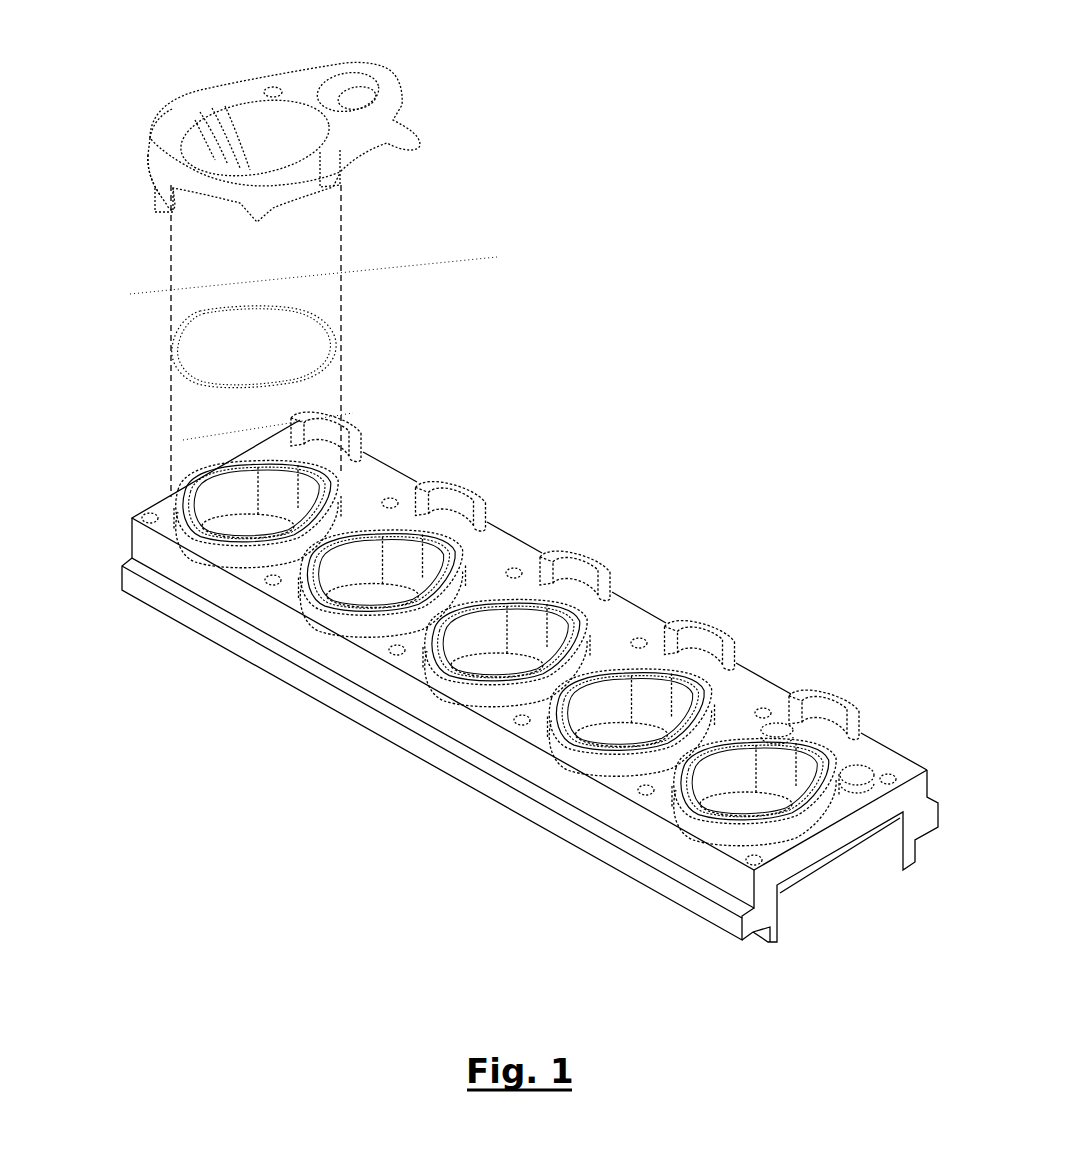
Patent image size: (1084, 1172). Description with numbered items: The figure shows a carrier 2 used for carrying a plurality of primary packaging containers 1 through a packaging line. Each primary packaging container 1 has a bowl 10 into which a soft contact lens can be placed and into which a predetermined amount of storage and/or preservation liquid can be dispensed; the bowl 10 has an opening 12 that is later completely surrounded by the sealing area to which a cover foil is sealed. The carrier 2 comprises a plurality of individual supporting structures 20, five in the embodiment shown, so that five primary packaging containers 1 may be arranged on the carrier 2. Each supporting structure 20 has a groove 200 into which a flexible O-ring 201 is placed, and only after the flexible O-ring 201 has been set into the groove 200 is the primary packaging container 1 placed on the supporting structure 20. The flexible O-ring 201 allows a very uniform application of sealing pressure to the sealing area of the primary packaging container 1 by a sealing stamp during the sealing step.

The primary packaging container 1 is at (207, 82).
The bowl 10 is at (260, 127).
The opening 12 is at (184, 138).
The carrier 2 is at (627, 603).
The supporting structure 20 is at (207, 572).
The groove 200 is at (343, 473).
The flexible O-ring 201 is at (287, 310).